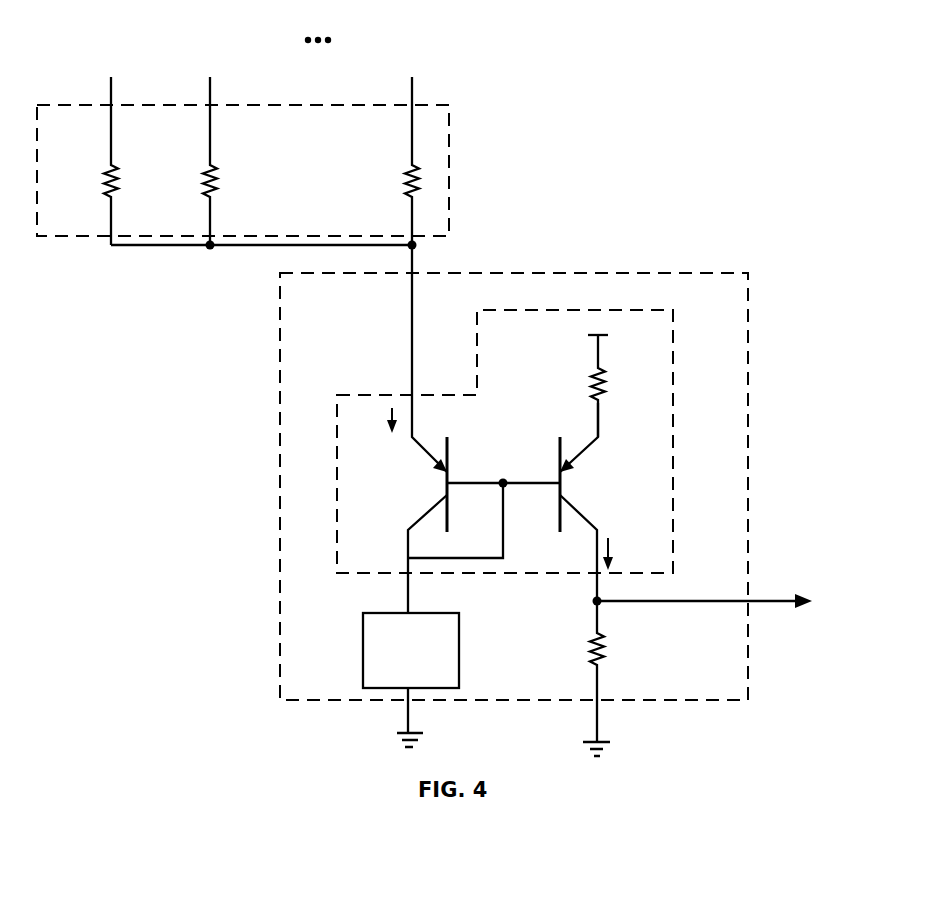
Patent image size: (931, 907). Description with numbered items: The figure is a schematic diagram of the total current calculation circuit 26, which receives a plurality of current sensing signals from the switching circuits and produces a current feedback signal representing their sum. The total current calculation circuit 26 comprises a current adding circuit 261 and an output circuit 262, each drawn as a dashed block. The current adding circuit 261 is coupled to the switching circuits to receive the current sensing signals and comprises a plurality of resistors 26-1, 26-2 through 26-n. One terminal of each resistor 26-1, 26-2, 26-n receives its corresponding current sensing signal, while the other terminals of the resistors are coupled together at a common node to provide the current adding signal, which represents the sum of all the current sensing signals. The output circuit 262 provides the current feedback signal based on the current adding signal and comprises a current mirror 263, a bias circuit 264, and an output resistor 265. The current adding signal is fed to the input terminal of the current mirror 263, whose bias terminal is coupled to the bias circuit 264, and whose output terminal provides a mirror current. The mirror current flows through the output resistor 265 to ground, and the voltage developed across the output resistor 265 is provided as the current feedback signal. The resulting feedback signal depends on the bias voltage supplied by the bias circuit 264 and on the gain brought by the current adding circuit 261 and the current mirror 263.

The total current calculation circuit 26 is at (668, 78).
The current adding circuit 261 is at (435, 104).
The resistor 26-1 is at (100, 182).
The resistor 26-2 is at (199, 182).
The resistor 26-n is at (396, 177).
The output circuit 262 is at (513, 272).
The current mirror 263 is at (676, 387).
The bias circuit 264 is at (362, 657).
The output resistor 265 is at (582, 655).